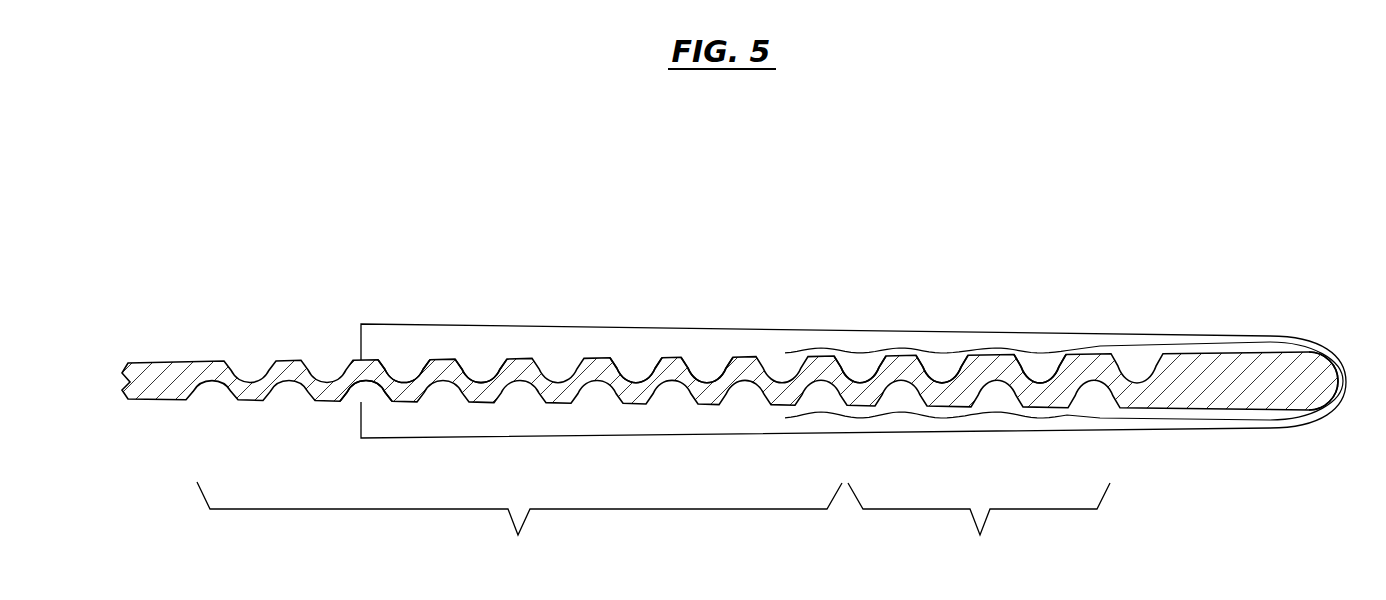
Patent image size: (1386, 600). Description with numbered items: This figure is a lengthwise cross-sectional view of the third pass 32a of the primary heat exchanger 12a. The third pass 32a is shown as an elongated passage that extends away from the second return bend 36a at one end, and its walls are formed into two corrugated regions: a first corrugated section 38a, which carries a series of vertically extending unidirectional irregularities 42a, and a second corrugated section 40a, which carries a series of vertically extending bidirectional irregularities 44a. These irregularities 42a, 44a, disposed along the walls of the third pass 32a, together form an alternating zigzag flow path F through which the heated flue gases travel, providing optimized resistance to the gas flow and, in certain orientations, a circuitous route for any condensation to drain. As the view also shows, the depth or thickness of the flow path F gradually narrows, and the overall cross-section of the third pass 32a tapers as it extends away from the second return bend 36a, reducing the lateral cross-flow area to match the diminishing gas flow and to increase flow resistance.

The primary heat exchanger 12a is at (1073, 223).
The third pass 32a is at (137, 363).
The second return bend 36a is at (1329, 383).
The first corrugated section 38a is at (979, 525).
The second corrugated section 40a is at (519, 525).
The unidirectional irregularities 42a is at (1042, 372).
The bidirectional irregularities 44a is at (510, 363).
The flow path F is at (330, 388).